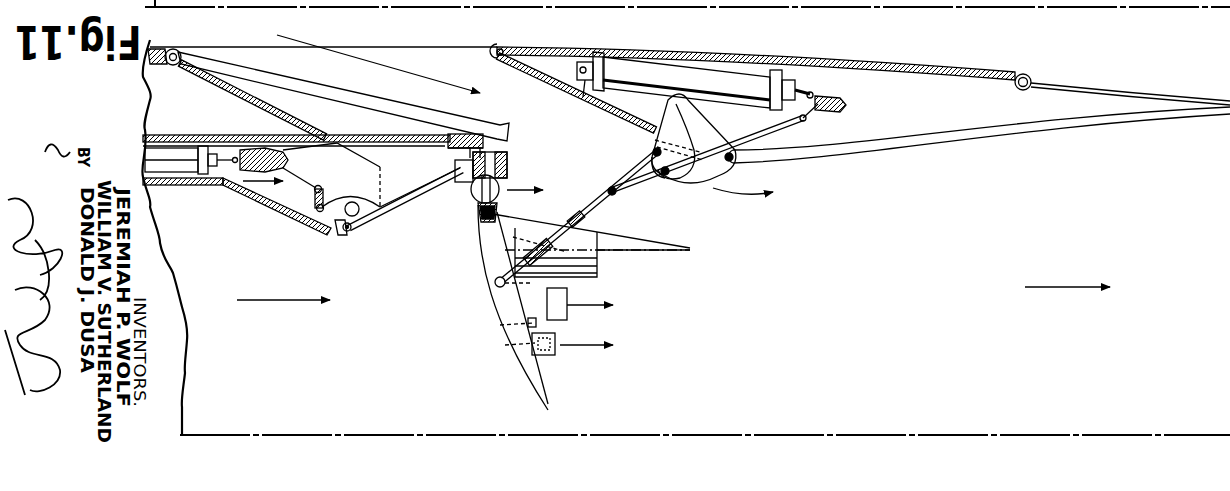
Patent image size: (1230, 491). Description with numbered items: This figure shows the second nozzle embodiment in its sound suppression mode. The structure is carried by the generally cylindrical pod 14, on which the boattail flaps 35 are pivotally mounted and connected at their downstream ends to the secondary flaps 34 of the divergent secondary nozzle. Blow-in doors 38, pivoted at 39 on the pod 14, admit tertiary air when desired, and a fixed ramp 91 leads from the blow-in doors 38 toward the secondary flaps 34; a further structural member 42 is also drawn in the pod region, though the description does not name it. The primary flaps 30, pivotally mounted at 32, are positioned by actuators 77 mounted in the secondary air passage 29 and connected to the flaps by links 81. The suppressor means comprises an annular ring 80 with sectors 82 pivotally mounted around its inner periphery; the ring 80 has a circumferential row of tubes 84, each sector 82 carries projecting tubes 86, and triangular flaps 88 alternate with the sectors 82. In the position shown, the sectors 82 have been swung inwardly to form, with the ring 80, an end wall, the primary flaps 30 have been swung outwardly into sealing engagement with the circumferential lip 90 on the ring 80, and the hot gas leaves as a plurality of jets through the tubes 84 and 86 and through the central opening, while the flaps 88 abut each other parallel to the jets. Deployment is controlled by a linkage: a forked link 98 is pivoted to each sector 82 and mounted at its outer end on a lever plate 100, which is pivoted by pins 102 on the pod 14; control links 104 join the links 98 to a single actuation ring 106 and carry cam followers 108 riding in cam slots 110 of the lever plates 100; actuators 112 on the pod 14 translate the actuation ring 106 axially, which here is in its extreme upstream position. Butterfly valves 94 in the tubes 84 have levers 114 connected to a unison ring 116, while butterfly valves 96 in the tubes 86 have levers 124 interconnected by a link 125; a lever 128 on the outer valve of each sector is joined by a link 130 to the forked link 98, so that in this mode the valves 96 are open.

The pod 14 is at (807, 53).
The secondary air passage 29 is at (241, 186).
The primary flaps 30 is at (388, 214).
The pivotal mounting of primary flaps 32 is at (348, 230).
The secondary flaps 34 is at (1028, 133).
The boattail flaps 35 is at (1125, 82).
The blow-in doors 38 is at (337, 85).
The blow-in door pivot 39 is at (183, 46).
The brace tube 42 is at (588, 97).
The actuators 77 is at (180, 170).
The annular ring 80 is at (453, 163).
The links 81 is at (345, 163).
The sectors 82 is at (530, 377).
The tubes 84 is at (476, 212).
The tubes 86 is at (555, 350).
The triangular flaps 88 is at (653, 252).
The circumferential lip 90 is at (465, 199).
The fixed ramp 91 is at (423, 134).
The butterfly valves 94 is at (495, 186).
The butterfly valves 96 is at (530, 307).
The forked link 98 is at (587, 207).
The lever plate 100 is at (703, 125).
The pins 102 is at (733, 160).
The control links 104 is at (781, 128).
The actuation ring 106 is at (843, 103).
The cam follower 108 is at (660, 178).
The cam slot 110 is at (707, 177).
The actuators 112 is at (670, 73).
The lever 114 is at (498, 154).
The unison ring 116 is at (492, 142).
The lever 124 is at (547, 363).
The link 125 is at (553, 328).
The lever 128 is at (549, 243).
The links 130 is at (560, 267).